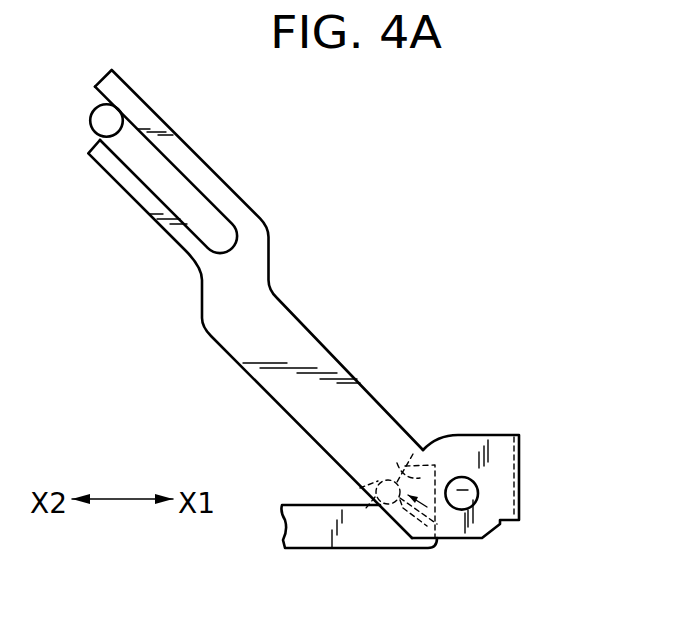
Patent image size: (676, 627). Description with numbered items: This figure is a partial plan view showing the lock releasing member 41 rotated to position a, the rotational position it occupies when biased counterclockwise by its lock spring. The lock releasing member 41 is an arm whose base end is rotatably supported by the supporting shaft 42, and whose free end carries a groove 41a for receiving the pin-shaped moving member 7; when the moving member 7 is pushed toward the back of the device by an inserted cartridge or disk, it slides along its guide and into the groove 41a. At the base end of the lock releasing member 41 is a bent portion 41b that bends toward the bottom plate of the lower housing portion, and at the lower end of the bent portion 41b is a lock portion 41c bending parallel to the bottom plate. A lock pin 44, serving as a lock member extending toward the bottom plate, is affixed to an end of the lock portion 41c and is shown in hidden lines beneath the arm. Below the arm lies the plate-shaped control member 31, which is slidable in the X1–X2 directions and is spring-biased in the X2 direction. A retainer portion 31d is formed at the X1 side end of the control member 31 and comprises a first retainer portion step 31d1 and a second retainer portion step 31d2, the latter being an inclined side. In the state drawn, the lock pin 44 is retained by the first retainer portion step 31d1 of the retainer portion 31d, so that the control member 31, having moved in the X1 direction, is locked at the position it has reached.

The moving member 7 is at (93, 125).
The lock releasing member 41 is at (300, 337).
The groove 41a is at (145, 173).
The position a is at (270, 217).
The bent portion 41b is at (521, 490).
The lock portion 41c is at (397, 463).
The supporting shaft 42 is at (473, 502).
The control member 31 is at (315, 542).
The retainer portion 31d is at (440, 517).
The first retainer portion step 31d1 is at (402, 500).
The second retainer portion step 31d2 is at (437, 467).
The lock pin 44 is at (413, 454).